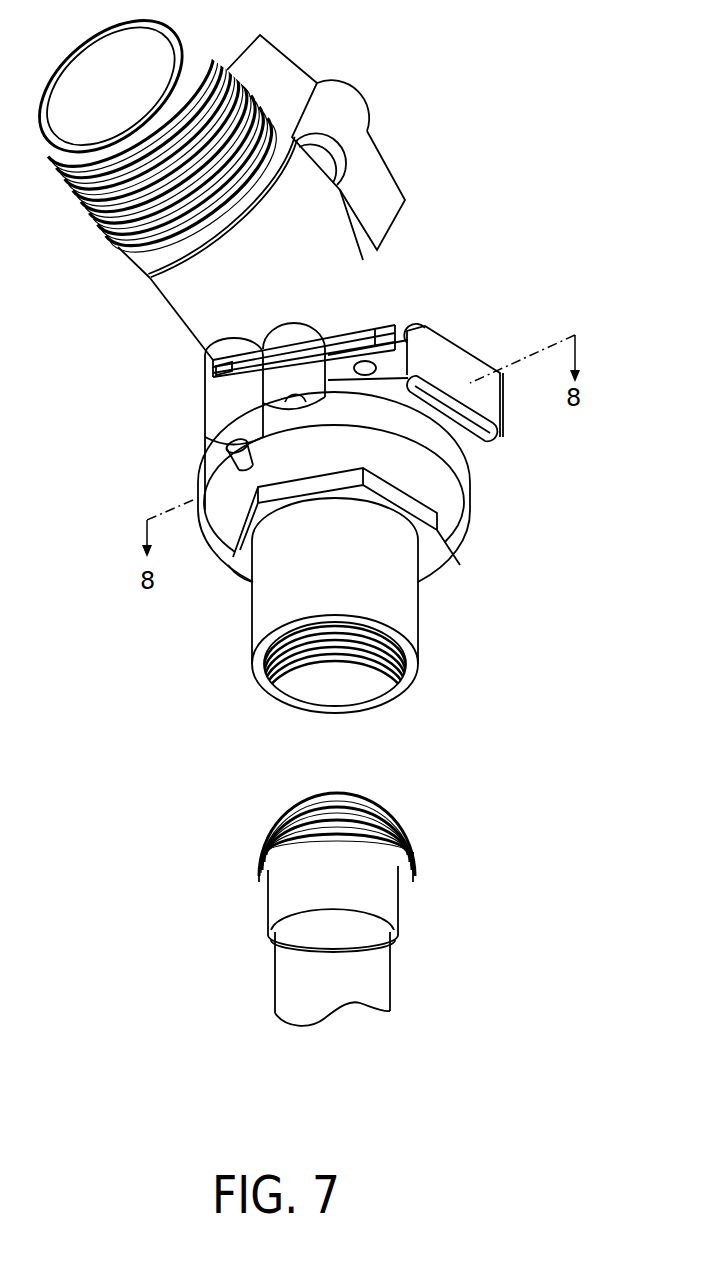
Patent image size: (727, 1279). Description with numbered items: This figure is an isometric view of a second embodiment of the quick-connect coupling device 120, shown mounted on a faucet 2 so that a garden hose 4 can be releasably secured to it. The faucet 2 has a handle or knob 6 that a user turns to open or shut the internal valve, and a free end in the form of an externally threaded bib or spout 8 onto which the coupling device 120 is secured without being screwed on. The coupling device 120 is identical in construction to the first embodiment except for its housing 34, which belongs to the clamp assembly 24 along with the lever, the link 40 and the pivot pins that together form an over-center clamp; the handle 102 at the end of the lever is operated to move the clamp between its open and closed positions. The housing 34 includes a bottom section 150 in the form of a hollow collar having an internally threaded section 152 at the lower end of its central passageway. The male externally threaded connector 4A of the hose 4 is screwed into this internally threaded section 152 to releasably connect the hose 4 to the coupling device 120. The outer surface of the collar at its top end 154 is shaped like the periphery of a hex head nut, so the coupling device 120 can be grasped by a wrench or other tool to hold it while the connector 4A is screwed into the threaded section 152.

The faucet 2 is at (213, 311).
The hose 4 is at (362, 970).
The male externally threaded connector 4A is at (414, 829).
The handle or knob 6 is at (372, 173).
The bib or spout 8 is at (188, 287).
The clamp assembly 24 is at (447, 340).
The housing 34 is at (200, 466).
The link 40 is at (350, 342).
The handle 102 is at (497, 403).
The coupling device 120 is at (493, 465).
The bottom section 150 is at (400, 602).
The internally threaded section 152 is at (382, 690).
The top end 154 is at (243, 577).